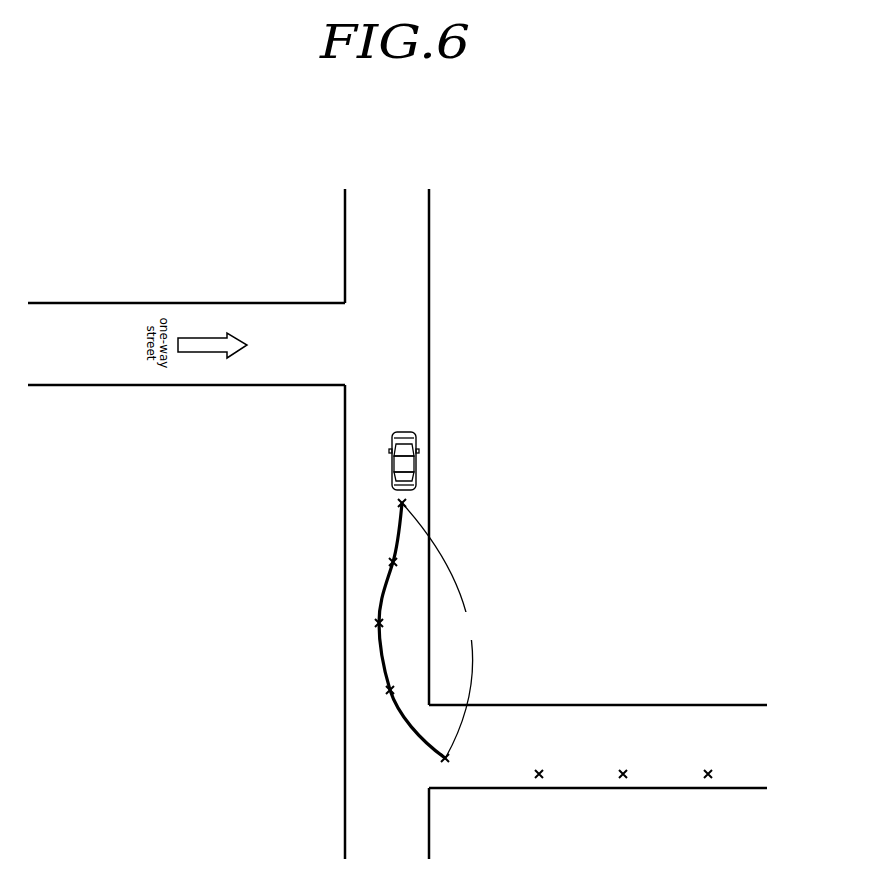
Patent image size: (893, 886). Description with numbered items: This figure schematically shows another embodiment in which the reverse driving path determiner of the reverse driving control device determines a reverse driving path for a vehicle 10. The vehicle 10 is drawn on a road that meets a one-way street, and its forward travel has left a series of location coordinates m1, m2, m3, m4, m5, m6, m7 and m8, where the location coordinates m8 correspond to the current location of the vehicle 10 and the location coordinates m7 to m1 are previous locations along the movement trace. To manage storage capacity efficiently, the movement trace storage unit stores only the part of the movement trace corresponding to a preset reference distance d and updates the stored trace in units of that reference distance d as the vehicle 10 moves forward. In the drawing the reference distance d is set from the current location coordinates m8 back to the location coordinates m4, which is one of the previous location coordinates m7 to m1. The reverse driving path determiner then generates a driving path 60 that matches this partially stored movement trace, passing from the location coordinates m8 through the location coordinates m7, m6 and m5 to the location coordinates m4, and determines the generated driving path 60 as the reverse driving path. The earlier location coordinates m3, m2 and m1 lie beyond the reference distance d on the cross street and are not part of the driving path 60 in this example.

The vehicle 10 is at (416, 462).
The driving path 60 is at (408, 727).
The reference distance d is at (440, 630).
The location coordinates m1 is at (708, 764).
The location coordinates m2 is at (623, 764).
The location coordinates m3 is at (539, 764).
The location coordinates m4 is at (443, 767).
The location coordinates m5 is at (404, 689).
The location coordinates m6 is at (394, 623).
The location coordinates m7 is at (406, 563).
The location coordinates m8 is at (389, 503).